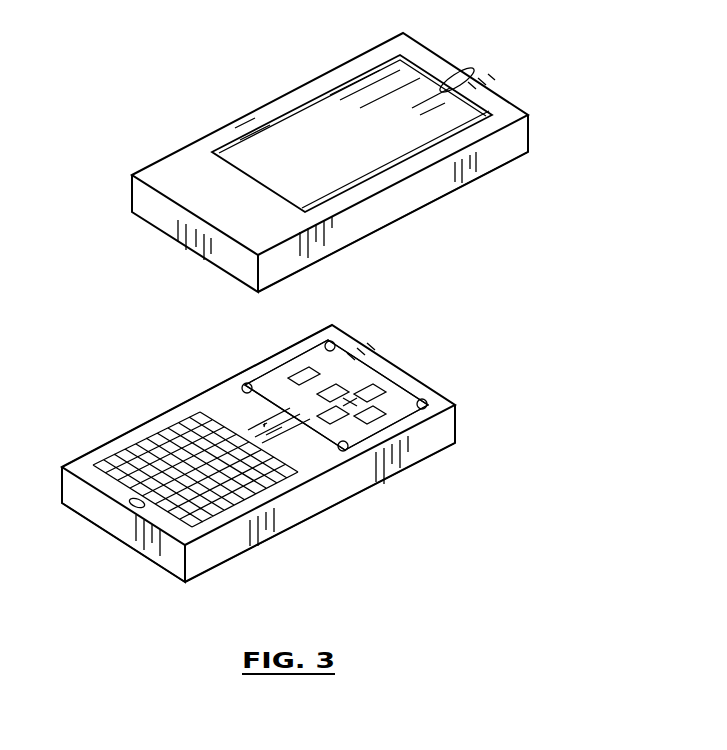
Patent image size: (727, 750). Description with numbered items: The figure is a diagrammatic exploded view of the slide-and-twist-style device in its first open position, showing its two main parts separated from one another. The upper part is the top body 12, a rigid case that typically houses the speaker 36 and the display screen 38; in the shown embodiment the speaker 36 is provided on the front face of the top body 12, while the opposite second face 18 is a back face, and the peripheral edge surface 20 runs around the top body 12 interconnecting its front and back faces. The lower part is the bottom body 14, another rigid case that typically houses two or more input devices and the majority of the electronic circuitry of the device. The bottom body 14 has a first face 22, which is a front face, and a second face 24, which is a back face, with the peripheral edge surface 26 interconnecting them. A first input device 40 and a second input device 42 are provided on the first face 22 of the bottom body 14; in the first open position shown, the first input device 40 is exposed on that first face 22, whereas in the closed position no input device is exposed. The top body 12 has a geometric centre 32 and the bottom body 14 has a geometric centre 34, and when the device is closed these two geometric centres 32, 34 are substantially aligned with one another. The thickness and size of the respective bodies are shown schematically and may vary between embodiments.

The top body 12 is at (268, 103).
The bottom body 14 is at (442, 452).
The second face 18 is at (423, 205).
The peripheral edge surface 20 is at (508, 147).
The first face 22 is at (208, 400).
The second face 24 is at (152, 563).
The peripheral edge surface 26 is at (345, 485).
The geometric centre 32 is at (263, 428).
The geometric centre 34 is at (336, 395).
The speaker 36 is at (457, 82).
The display screen 38 is at (384, 149).
The first input device 40 is at (202, 500).
The second input device 42 is at (378, 398).